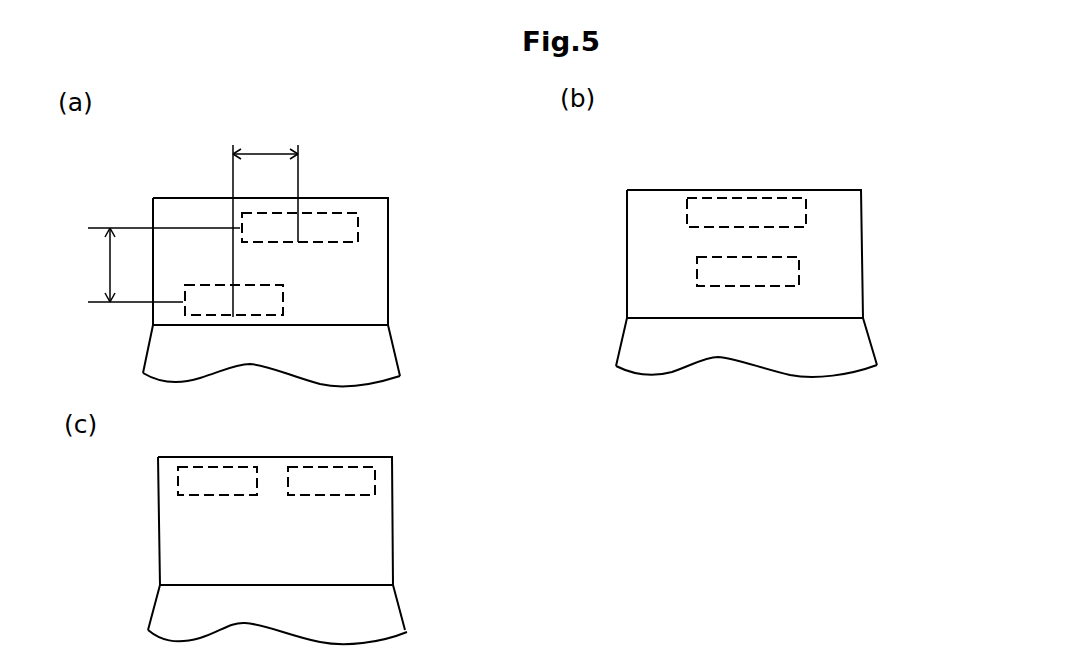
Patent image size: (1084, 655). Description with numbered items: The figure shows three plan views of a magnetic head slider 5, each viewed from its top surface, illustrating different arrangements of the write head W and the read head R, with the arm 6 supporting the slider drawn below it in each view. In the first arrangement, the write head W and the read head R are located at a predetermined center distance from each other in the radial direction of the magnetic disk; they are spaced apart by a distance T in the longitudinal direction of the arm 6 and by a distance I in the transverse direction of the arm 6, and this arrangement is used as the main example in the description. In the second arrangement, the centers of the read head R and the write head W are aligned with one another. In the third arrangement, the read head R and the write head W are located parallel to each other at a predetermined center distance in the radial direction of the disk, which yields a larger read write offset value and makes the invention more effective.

The magnetic head slider 5 is at (388, 255).
The arm 6 is at (400, 353).
The write head W is at (524, 346).
The read head R is at (488, 376).
The distance in the transverse direction of the arm I is at (265, 222).
The distance in the longitudinal direction of the arm T is at (161, 265).